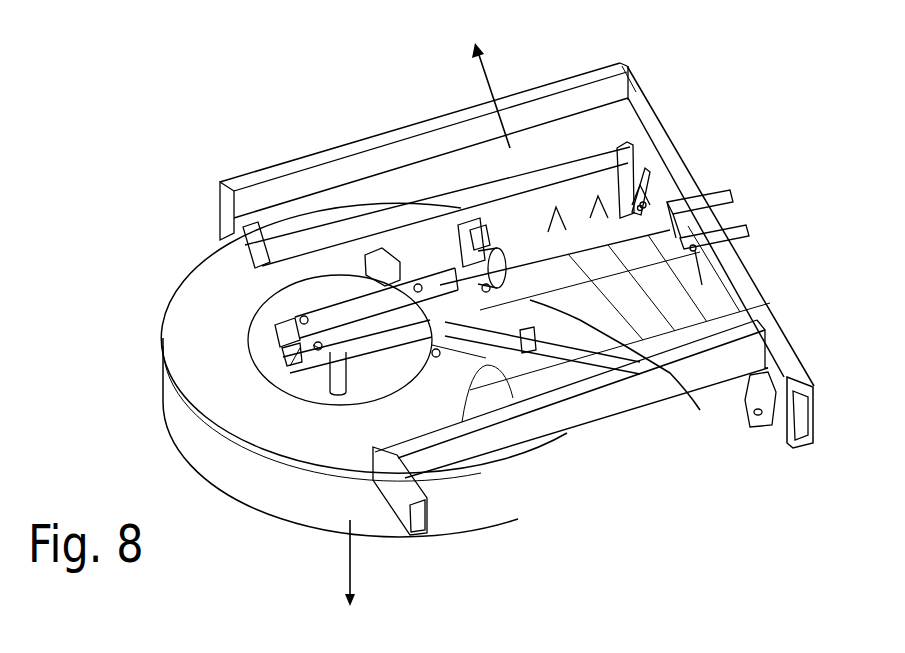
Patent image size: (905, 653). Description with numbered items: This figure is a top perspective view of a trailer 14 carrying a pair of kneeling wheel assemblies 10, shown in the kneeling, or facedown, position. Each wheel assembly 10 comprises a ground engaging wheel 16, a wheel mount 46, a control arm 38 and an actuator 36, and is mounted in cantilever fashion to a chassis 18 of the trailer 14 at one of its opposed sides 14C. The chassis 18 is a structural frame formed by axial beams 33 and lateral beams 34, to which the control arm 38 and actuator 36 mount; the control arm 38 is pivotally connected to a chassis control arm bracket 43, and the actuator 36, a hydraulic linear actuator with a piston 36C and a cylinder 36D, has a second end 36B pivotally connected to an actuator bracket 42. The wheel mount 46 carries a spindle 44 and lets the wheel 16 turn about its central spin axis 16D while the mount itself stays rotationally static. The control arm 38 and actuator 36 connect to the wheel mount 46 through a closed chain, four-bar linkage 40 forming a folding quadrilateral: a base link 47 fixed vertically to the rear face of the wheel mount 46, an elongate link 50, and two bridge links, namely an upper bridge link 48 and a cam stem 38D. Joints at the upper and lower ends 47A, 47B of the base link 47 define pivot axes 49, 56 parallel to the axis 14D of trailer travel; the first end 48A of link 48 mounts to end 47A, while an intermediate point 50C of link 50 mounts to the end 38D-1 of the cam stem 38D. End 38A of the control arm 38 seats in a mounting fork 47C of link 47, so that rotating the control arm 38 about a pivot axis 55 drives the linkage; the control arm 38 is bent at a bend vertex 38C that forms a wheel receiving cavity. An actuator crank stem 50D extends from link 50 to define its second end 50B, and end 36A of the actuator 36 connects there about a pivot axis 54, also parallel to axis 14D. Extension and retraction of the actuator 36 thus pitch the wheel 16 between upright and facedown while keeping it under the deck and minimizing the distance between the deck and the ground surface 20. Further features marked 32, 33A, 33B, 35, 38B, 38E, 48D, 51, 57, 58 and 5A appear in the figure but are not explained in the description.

The wheel assembly 10 is at (150, 63).
The trailer 14 is at (440, 120).
The opposed sides 14C is at (264, 560).
The axis of trailer travel 14D is at (487, 77).
The ground engaging wheel 16 is at (185, 330).
The central spin axis 16D is at (352, 560).
The chassis 18 is at (531, 284).
The ground surface 20 is at (518, 312).
The base 32 is at (135, 400).
The axial beams 33 is at (650, 121).
The side rail upper end 33A is at (637, 100).
The side rail lower end 33B is at (777, 413).
The lateral beams 34 is at (650, 447).
The front rail end 35 is at (516, 478).
The actuator 36 is at (525, 251).
The end of actuator 36A is at (460, 288).
The second end of actuator 36B is at (700, 212).
The piston 36C is at (463, 290).
The cylinder 36D is at (599, 228).
The control arm 38 is at (540, 360).
The end of control arm 38A is at (367, 267).
The linkage bracket 38B is at (637, 192).
The bend vertex 38C is at (468, 235).
The cam stem 38D is at (346, 97).
The end of cam stem 38D-1 is at (643, 210).
The linkage portion 38E is at (688, 330).
The closed chain linkage 40 is at (280, 306).
The actuator bracket 42 is at (745, 232).
The chassis control arm bracket 43 is at (760, 390).
The spindle 44 is at (354, 374).
The wheel mount 46 is at (249, 199).
The base link 47 is at (370, 347).
The upper end of base link 47A is at (283, 360).
The lower end of base link 47B is at (450, 350).
The mounting fork 47C is at (536, 451).
The upper bridge link 48 is at (310, 358).
The first end of bridge link 48A is at (300, 363).
The fastener head 48D is at (300, 320).
The pivot axis 49 is at (277, 330).
The elongate link 50 is at (432, 214).
The second end of elongate link 50B is at (490, 287).
The intermediate point 50C is at (368, 262).
The actuator crank stem 50D is at (470, 292).
The fastener 51 is at (300, 297).
The pivot axis 54 is at (440, 290).
The pivot axis 55 is at (433, 350).
The pivot axis 56 is at (512, 355).
The fastener 57 is at (704, 288).
The strut 58 is at (700, 407).
The section marker 5A is at (318, 350).